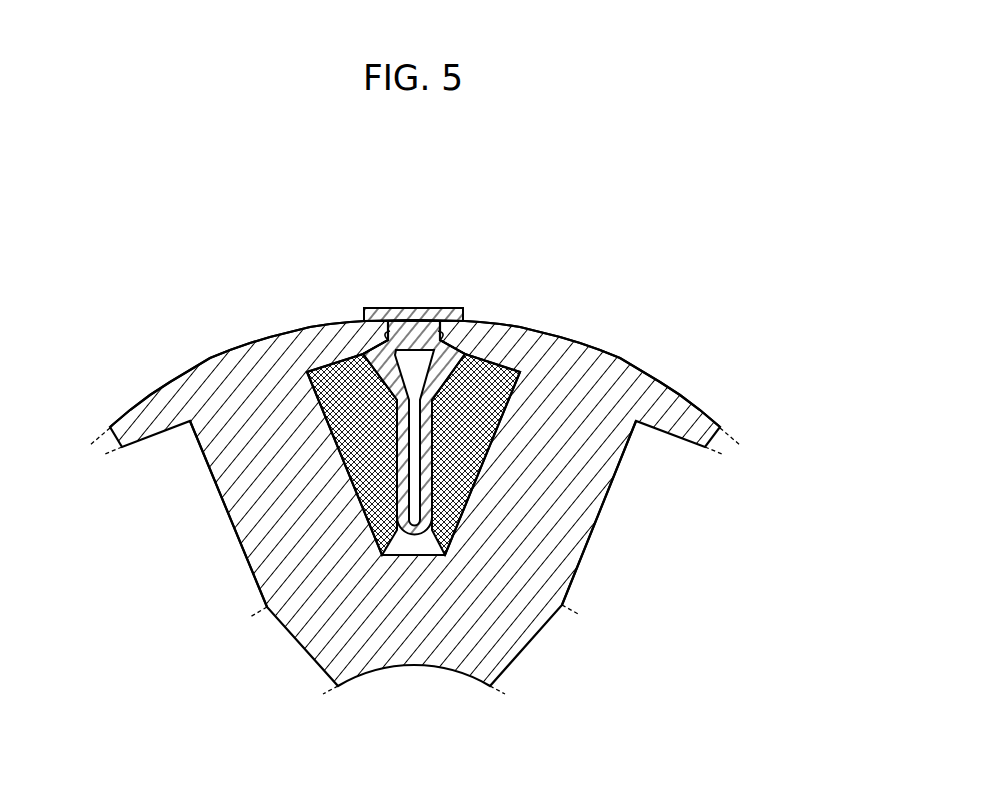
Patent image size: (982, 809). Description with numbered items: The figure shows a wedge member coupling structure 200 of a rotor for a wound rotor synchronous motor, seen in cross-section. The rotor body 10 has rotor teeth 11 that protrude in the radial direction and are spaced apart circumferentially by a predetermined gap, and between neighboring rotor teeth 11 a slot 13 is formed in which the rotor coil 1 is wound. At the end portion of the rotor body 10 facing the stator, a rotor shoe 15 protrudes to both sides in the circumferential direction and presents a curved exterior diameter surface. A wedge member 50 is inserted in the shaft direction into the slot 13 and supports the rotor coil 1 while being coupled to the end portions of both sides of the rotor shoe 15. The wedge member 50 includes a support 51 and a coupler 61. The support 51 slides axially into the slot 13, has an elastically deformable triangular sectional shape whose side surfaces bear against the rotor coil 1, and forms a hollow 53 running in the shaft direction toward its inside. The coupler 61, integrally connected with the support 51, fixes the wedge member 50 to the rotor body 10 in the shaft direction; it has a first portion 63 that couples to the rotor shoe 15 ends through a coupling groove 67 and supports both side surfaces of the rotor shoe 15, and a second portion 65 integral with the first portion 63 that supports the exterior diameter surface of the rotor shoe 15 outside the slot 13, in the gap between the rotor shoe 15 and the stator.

The stator 200 is at (434, 196).
The rotor body 10 is at (216, 498).
The rotor teeth 11 is at (253, 535).
The slot 13 is at (413, 545).
The rotor shoe 15 is at (206, 354).
The wedge member 50 is at (471, 388).
The support 51 is at (427, 455).
The hollow 53 is at (468, 352).
The coupler 61 is at (380, 274).
The first portion 63 is at (408, 318).
The second portion 65 is at (366, 322).
The coupling groove 67 is at (375, 337).
The rotor coil 1 is at (417, 370).